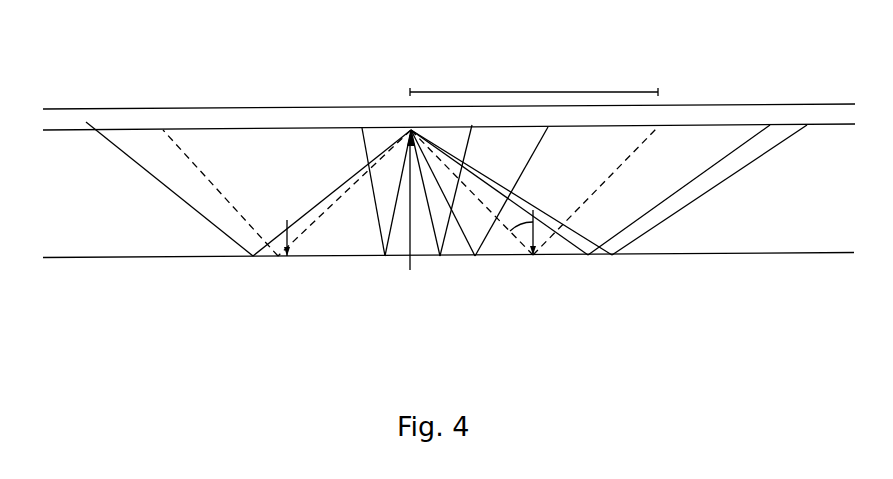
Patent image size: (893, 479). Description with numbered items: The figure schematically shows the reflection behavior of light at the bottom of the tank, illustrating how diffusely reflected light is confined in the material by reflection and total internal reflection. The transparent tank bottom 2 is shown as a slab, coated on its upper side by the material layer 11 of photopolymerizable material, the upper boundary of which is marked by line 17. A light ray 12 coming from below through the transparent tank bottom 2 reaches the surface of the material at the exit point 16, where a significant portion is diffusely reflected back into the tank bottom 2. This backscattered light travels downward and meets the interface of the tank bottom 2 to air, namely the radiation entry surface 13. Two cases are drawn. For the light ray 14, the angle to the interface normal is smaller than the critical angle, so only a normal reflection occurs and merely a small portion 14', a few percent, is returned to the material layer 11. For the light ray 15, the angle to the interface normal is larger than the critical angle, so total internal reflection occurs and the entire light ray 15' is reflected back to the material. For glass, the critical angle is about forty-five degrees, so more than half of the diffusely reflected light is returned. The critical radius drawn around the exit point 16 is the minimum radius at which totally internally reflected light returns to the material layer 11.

The tank bottom 2 is at (773, 233).
The material layer 11 is at (750, 118).
The light ray 12 is at (410, 242).
The radiation entry surface 13 is at (153, 257).
The light ray 14 is at (428, 231).
The portion 14' is at (339, 137).
The light ray 15 is at (511, 232).
The light ray 15' is at (697, 137).
The exit point 16 is at (407, 121).
The interface 17 is at (213, 128).